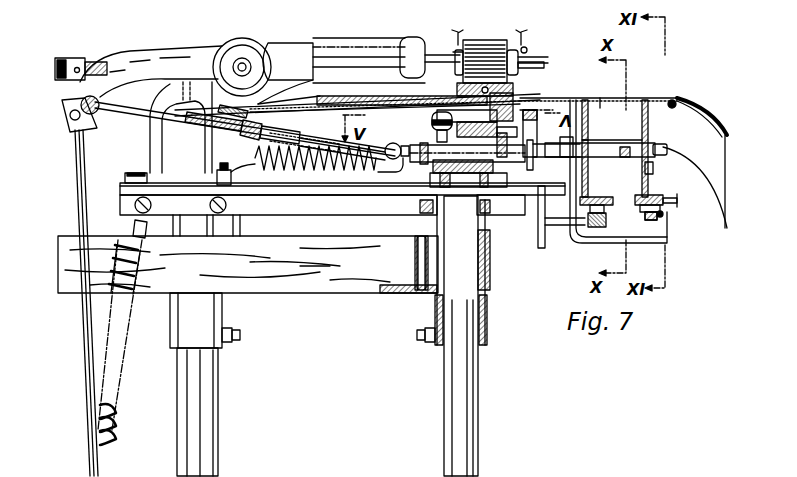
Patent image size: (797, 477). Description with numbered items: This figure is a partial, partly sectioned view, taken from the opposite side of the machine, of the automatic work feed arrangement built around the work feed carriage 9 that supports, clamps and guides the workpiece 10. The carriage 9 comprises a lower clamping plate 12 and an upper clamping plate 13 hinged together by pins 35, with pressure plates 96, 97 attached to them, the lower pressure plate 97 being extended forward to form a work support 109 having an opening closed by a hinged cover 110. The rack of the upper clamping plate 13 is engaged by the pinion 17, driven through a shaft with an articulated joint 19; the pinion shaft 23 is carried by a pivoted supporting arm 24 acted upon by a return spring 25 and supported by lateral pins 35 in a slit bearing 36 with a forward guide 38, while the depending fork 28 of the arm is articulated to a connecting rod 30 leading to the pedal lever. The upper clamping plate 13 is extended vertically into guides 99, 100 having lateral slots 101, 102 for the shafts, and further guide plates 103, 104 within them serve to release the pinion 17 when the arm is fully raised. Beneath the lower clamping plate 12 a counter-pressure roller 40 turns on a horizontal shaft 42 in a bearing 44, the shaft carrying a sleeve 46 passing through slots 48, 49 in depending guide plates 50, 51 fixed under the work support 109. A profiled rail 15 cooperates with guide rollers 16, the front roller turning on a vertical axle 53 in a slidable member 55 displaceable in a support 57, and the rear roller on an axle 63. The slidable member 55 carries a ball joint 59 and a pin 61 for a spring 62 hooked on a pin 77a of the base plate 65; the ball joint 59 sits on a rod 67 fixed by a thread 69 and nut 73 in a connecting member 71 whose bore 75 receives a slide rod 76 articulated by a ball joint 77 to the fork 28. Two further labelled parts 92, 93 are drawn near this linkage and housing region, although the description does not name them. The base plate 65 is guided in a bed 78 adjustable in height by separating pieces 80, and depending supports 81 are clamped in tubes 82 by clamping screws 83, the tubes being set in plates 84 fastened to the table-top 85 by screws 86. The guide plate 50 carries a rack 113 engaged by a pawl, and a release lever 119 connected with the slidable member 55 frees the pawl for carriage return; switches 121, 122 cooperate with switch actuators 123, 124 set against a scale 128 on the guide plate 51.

The work feed carriage 9 is at (650, 87).
The workpiece 10 is at (688, 88).
The lower clamping plate 12 is at (533, 98).
The upper clamping plate 13 is at (528, 82).
The profiled rail 15 is at (553, 100).
The guide rollers 16 is at (434, 128).
The pinion 17 is at (490, 44).
The articulated joint 19 is at (73, 65).
The shaft of the driving pinion 23 is at (98, 64).
The supporting arm 24 is at (368, 50).
The return spring 25 is at (118, 428).
The depending fork 28 is at (90, 90).
The connecting rod 30 is at (84, 222).
The lateral pins 35 is at (238, 57).
The slit bearing 36 is at (160, 144).
The forward guide 38 is at (276, 60).
The counter-pressure roller 40 is at (540, 238).
The horizontal shaft 42 is at (667, 148).
The bearing 44 is at (522, 172).
The sleeve 46 is at (612, 155).
The slot 48 is at (588, 162).
The slot 49 is at (653, 165).
The guide plate 50 is at (589, 120).
The guide plate 51 is at (650, 125).
The vertical axle 53 is at (590, 128).
The slidable member 55 is at (548, 151).
The support 57 is at (466, 176).
The ball joint 59 is at (393, 143).
The pin 61 is at (397, 172).
The spring 62 is at (238, 166).
The axle 63 is at (432, 118).
The base plate 65 is at (387, 196).
The rod 67 is at (336, 146).
The thread 69 is at (298, 166).
The connecting member 71 is at (245, 130).
The nut 73 is at (298, 136).
The bore 75 is at (222, 119).
The slide rod 76 is at (170, 117).
The ball joint 77 is at (95, 112).
The pin 77a is at (216, 190).
The bed 78 is at (277, 205).
The separating piece 80 is at (205, 227).
The depending support 81 is at (200, 414).
The tube 82 is at (205, 315).
The clamping screw 83 is at (237, 340).
The plate 84 is at (352, 278).
The table-top 85 is at (313, 262).
The screw 86 is at (422, 244).
The sleeve 92 is at (244, 118).
The housing 93 is at (318, 104).
The upper pressure plate 96 is at (382, 105).
The lower pressure plate 97 is at (366, 110).
The guide 99 is at (521, 40).
The guide 100 is at (458, 33).
The lateral slot 101 is at (527, 50).
The lateral slot 102 is at (455, 51).
The guide plate 103 is at (460, 82).
The guide plate 104 is at (543, 66).
The work support 109 is at (650, 96).
The hinged cover 110 is at (705, 110).
The rack 113 is at (600, 206).
The release lever 119 is at (572, 236).
The switch 121 is at (662, 216).
The switch 122 is at (640, 207).
The switch actuator 123 is at (657, 214).
The switch actuator 124 is at (651, 216).
The scale 128 is at (672, 200).